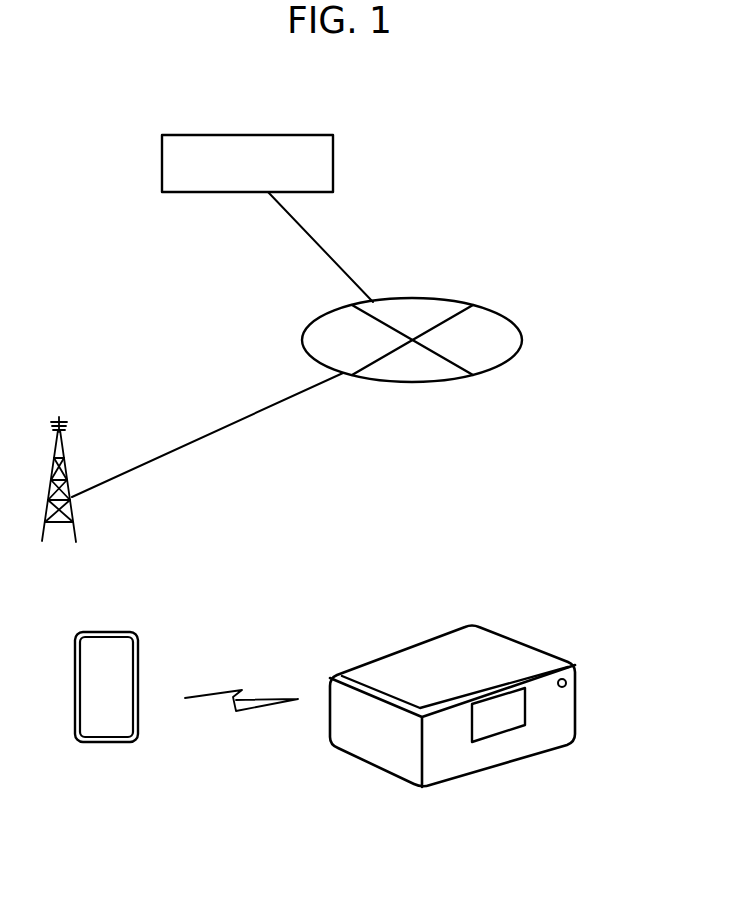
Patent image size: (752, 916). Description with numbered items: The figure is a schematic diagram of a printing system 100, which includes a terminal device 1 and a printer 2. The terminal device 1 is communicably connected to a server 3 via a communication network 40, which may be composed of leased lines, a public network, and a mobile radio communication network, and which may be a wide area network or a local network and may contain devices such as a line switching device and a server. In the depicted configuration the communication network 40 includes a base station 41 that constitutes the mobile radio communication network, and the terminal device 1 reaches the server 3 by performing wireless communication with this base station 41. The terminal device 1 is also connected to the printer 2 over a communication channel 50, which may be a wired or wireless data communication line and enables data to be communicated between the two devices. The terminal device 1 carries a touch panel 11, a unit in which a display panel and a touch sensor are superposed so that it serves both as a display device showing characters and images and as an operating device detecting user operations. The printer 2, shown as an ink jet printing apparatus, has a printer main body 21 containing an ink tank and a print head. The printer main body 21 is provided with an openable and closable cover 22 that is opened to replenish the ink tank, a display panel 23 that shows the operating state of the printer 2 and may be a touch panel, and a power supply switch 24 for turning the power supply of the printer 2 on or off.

The printing system 100 is at (531, 174).
The server 3 is at (333, 165).
The communication network 40 is at (522, 340).
The base station 41 is at (77, 530).
The terminal device 1 is at (131, 680).
The touch panel 11 is at (120, 725).
The communication channel 50 is at (233, 713).
The printer 2 is at (481, 691).
The printer main body 21 is at (562, 717).
The cover 22 is at (520, 653).
The display panel 23 is at (518, 727).
The power supply switch 24 is at (568, 682).